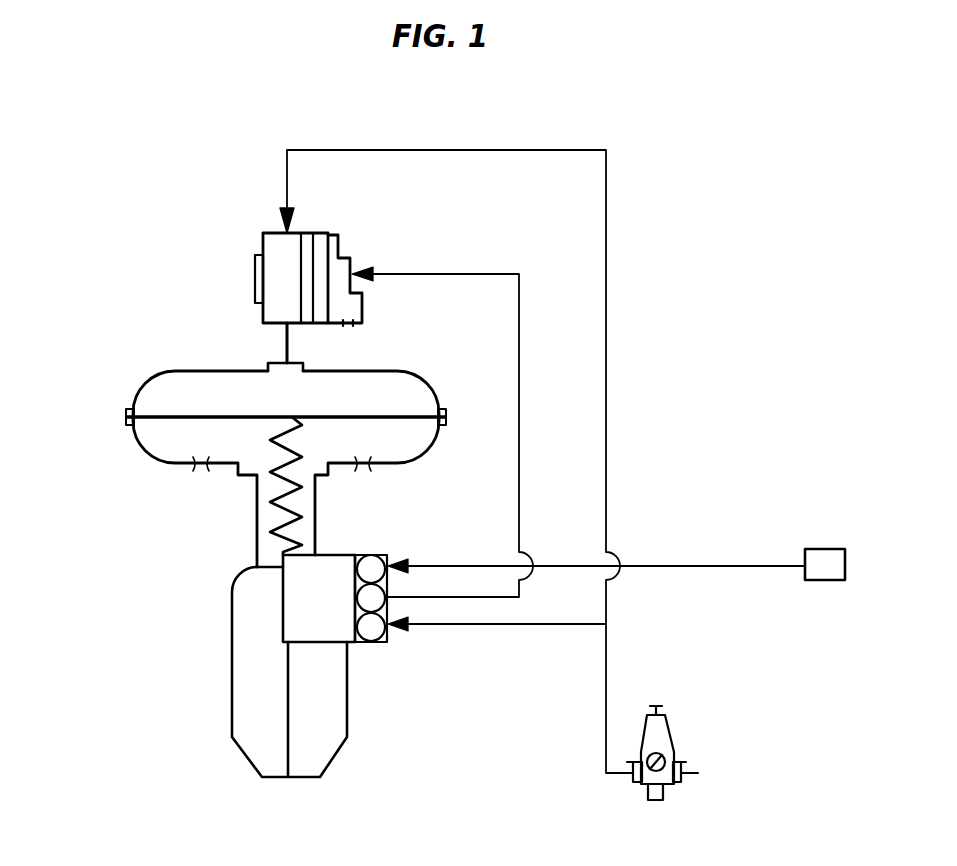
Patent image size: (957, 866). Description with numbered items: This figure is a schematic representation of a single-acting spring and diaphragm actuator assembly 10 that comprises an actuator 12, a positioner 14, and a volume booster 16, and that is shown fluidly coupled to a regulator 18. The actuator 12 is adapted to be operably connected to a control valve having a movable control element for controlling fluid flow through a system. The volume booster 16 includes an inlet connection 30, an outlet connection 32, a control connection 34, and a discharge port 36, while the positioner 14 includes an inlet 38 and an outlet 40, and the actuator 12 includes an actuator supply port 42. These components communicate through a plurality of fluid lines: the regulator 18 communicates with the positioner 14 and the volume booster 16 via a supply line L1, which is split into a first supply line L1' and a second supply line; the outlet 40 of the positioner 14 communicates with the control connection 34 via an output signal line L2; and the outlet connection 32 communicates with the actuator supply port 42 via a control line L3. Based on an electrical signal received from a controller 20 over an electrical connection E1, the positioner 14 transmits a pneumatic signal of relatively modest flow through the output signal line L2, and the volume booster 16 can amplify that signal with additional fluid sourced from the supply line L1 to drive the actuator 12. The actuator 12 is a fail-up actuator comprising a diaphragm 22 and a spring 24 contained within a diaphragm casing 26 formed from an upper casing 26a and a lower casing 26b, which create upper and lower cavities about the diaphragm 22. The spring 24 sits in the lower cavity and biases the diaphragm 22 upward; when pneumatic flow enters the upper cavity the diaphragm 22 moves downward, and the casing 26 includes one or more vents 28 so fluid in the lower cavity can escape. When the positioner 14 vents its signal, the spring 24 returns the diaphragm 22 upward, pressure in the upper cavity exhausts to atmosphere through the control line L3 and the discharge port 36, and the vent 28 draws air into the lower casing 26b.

The actuator assembly 10 is at (133, 206).
The actuator 12 is at (216, 608).
The positioner 14 is at (372, 632).
The volume booster 16 is at (305, 263).
The regulator 18 is at (671, 730).
The controller 20 is at (825, 581).
The diaphragm 22 is at (248, 451).
The spring 24 is at (278, 500).
The diaphragm casing 26 is at (112, 417).
The upper casing 26a is at (142, 389).
The lower casing 26b is at (142, 447).
The vent 28 is at (200, 470).
The inlet connection 30 is at (282, 228).
The outlet connection 32 is at (283, 328).
The control connection 34 is at (352, 266).
The discharge port 36 is at (350, 328).
The inlet 38 is at (388, 626).
The outlet 40 is at (388, 595).
The actuator supply port 42 is at (300, 362).
The supply line L1 is at (630, 698).
The first supply line L1' is at (497, 641).
The output signal line L2 is at (519, 487).
The control line L3 is at (283, 341).
The electrical connection E1 is at (702, 566).